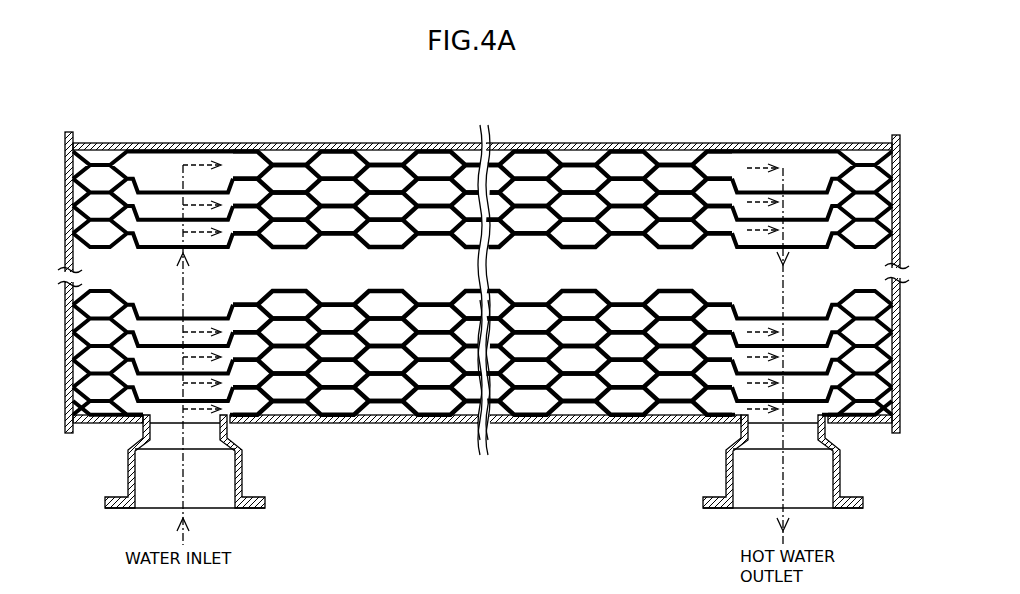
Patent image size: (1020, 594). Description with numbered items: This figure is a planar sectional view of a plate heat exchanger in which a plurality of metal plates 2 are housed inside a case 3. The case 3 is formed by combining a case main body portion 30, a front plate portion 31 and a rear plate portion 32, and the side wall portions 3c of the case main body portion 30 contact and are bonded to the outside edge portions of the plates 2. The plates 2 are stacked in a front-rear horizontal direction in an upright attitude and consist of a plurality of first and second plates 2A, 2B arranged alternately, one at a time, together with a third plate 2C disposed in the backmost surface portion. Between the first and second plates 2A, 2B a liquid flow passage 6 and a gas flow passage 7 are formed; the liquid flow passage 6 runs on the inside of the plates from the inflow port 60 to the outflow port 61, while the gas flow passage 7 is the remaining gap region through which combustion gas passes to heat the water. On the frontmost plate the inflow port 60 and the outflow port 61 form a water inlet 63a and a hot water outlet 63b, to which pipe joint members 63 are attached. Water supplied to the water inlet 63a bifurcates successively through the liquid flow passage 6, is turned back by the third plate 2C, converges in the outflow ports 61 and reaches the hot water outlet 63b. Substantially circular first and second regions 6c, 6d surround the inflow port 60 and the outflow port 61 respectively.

The case 3 is at (476, 280).
The case main body portion 30 is at (70, 188).
The side wall portions 3c is at (71, 231).
The plates 2 is at (482, 294).
The first plate 2A is at (684, 244).
The second plate 2B is at (596, 243).
The third plate 2C is at (591, 158).
The liquid flow passage 6 is at (357, 237).
The gas flow passage 7 is at (391, 239).
The first region 6c is at (116, 406).
The second region 6d is at (710, 421).
The front plate portion 31 is at (562, 438).
The rear plate portion 32 is at (494, 131).
The inflow port 60 is at (164, 207).
The outflow port 61 is at (799, 212).
The pipe joint members 63 is at (498, 480).
The water inlet 63a is at (221, 494).
The hot water outlet 63b is at (830, 492).